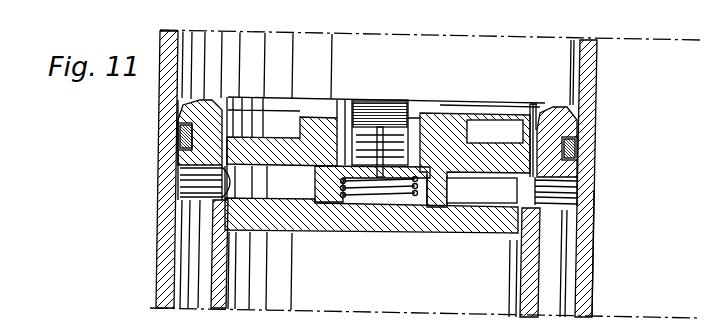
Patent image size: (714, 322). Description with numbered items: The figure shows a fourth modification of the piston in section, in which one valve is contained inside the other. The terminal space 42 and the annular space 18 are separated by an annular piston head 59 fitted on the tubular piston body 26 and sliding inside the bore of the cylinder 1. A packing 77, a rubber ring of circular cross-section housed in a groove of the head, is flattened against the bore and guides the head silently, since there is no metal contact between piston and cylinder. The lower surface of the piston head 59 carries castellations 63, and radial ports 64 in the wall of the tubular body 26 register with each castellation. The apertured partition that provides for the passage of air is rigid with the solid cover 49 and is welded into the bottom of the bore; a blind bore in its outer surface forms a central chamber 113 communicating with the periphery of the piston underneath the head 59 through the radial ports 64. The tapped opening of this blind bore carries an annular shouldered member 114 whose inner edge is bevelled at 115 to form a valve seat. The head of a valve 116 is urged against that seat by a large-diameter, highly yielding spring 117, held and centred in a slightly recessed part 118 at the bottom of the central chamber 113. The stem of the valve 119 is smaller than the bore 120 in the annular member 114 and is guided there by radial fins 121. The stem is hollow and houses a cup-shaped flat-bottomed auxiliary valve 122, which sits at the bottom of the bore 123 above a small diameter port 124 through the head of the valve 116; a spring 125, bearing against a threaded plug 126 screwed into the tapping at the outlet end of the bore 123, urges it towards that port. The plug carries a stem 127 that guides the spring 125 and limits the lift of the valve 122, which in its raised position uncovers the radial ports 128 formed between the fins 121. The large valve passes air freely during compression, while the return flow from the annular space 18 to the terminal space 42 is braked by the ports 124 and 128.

The cylinder 1 is at (586, 60).
The annular space 18 is at (591, 221).
The tubular piston body 26 is at (537, 273).
The terminal space 42 is at (581, 88).
The solid cover 49 is at (503, 229).
The annular piston head 59 is at (579, 118).
The castellations 63 is at (567, 195).
The radial ports 64 is at (578, 173).
The packing 77 is at (573, 148).
The central chamber 113 is at (318, 203).
The annular shouldered member 114 is at (313, 120).
The bevelled inner edge 115 is at (453, 193).
The valve 116 is at (432, 207).
The spring 117 is at (347, 206).
The recessed part 118 is at (410, 210).
The stem of the valve 119 is at (409, 121).
The bore 120 is at (347, 122).
The radial fins 121 is at (435, 152).
The auxiliary valve 122 is at (447, 140).
The bore 123 is at (368, 100).
The small diameter port 124 is at (466, 146).
The spring 125 is at (393, 101).
The threaded plug 126 is at (372, 130).
The stem 127 is at (401, 118).
The radial ports 128 is at (317, 170).